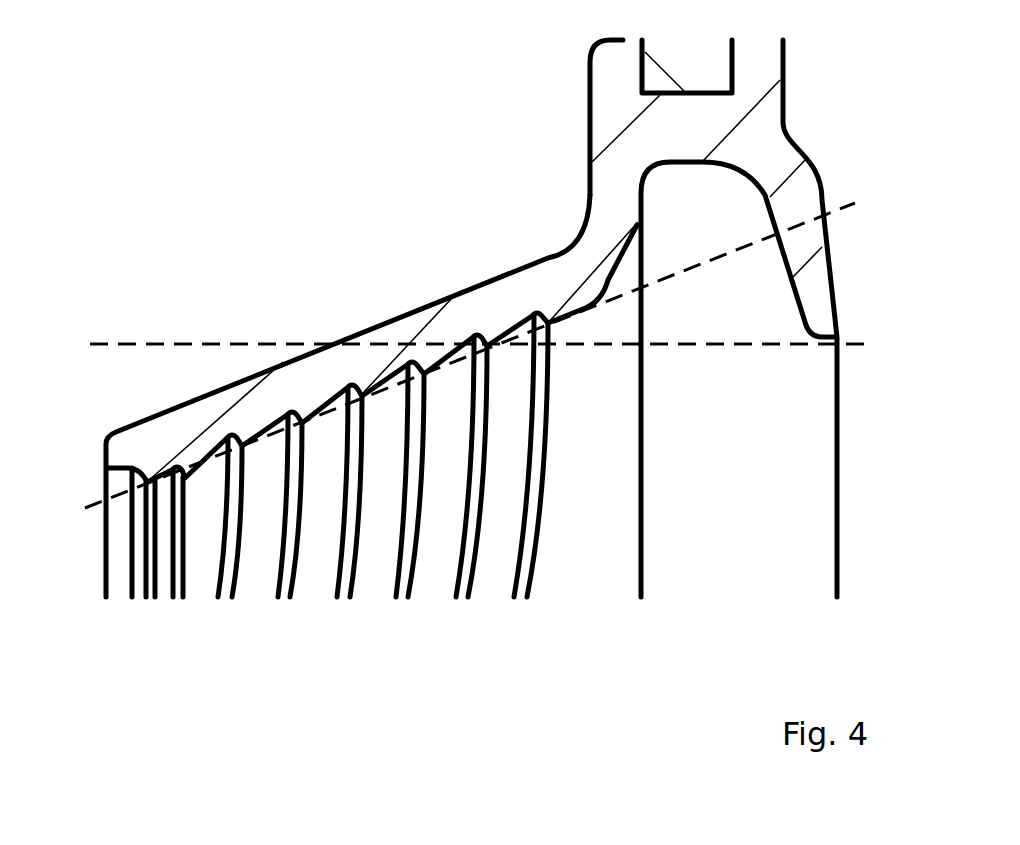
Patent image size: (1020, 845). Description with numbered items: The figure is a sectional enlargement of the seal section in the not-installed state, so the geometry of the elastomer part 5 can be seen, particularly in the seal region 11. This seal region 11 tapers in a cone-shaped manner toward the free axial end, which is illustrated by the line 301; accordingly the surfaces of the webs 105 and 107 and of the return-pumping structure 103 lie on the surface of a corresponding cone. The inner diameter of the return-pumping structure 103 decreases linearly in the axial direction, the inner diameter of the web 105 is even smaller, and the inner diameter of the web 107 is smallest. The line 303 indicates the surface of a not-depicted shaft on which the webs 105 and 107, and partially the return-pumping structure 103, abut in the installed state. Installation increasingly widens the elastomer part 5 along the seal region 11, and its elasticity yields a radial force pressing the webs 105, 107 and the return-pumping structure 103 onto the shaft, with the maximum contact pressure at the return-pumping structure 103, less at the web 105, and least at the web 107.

The elastomer part 5 is at (598, 107).
The seal region 11 is at (417, 283).
The return-pumping structure 103 is at (312, 583).
The web 105 is at (180, 598).
The web 107 is at (148, 598).
The line 301 is at (105, 508).
The line 303 is at (120, 345).